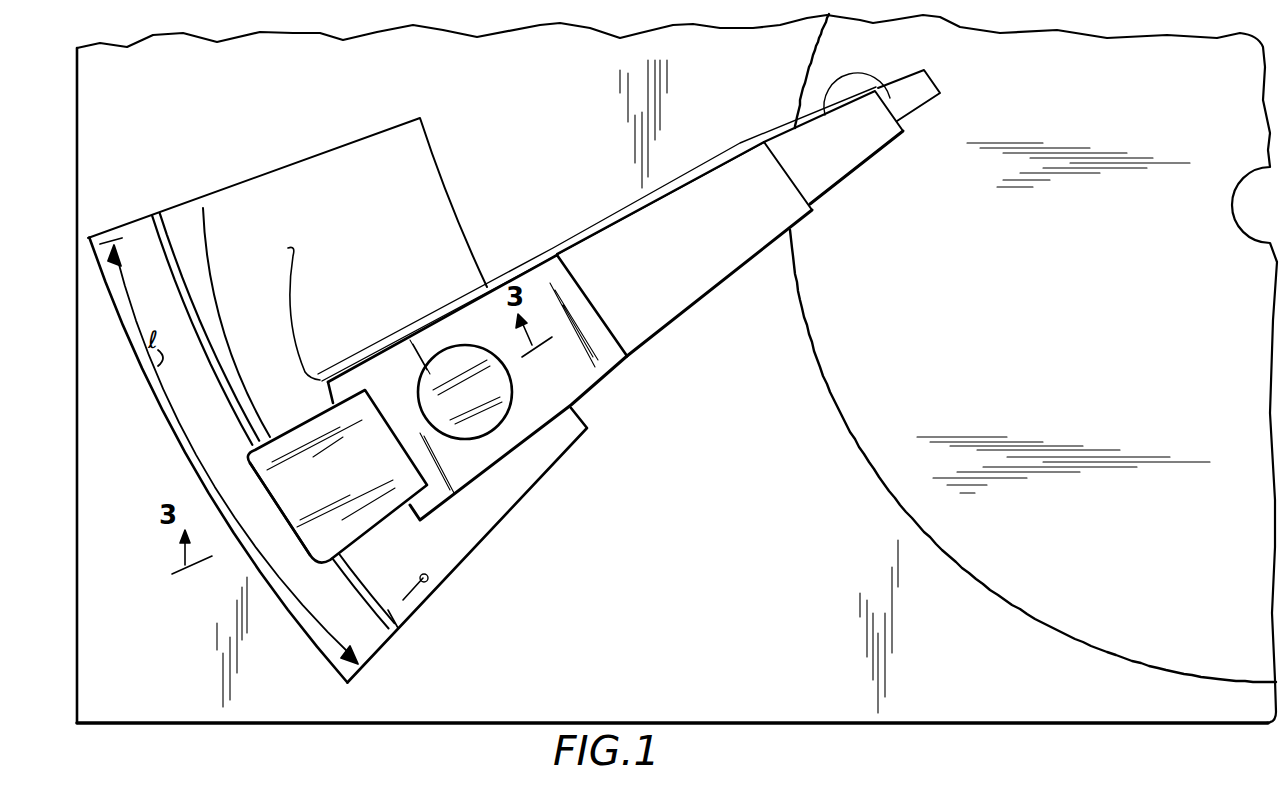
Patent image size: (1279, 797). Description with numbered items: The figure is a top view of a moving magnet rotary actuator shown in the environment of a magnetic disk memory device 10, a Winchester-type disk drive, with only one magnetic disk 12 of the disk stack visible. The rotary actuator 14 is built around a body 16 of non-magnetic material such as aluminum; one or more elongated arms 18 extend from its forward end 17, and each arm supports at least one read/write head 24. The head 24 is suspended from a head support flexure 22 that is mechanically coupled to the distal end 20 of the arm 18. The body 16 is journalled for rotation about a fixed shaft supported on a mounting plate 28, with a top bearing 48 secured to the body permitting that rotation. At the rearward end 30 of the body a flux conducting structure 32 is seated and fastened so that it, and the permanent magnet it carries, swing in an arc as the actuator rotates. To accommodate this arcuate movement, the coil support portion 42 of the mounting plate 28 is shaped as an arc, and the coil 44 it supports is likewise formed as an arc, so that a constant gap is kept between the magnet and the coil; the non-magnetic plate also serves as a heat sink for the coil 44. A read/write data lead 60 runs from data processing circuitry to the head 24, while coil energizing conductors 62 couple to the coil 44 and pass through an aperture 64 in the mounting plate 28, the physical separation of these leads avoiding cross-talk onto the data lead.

The magnetic disk memory device 10 is at (713, 681).
The magnetic disk 12 is at (860, 453).
The rotary actuator 14 is at (527, 220).
The body 16 is at (525, 267).
The forward end 17 is at (582, 290).
The elongated arm 18 is at (803, 218).
The distal end 20 is at (779, 163).
The head support flexure 22 is at (858, 170).
The read/write head 24 is at (920, 110).
The mounting plate 28 is at (490, 512).
The rearward end 30 is at (332, 398).
The flux conducting structure 32 is at (243, 472).
The coil support portion 42 is at (218, 385).
The coil 44 is at (223, 359).
The top bearing 48 is at (473, 343).
The read/write data lead 60 is at (297, 347).
The coil energizing conductors 62 is at (417, 583).
The aperture 64 is at (430, 578).